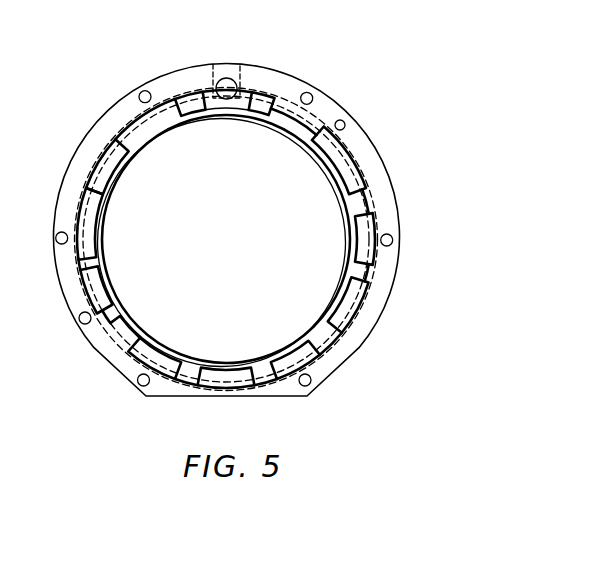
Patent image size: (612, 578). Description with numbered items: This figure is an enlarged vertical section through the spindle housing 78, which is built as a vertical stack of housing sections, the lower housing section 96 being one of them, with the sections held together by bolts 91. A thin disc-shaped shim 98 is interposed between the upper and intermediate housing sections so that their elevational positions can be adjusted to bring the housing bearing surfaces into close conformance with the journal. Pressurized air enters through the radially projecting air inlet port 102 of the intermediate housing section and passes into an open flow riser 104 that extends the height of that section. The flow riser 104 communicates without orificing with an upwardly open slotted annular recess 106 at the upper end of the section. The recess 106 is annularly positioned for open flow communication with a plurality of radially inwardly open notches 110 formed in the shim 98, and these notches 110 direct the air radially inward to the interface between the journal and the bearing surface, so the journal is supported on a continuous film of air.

The spindle housing 78 is at (279, 208).
The bolts 91 is at (346, 126).
The lower housing section 96 is at (298, 82).
The shim 98 is at (386, 182).
The air inlet port 102 is at (236, 70).
The flow riser 104 is at (226, 100).
The slotted annular recess 106 is at (350, 273).
The notches 110 is at (327, 150).